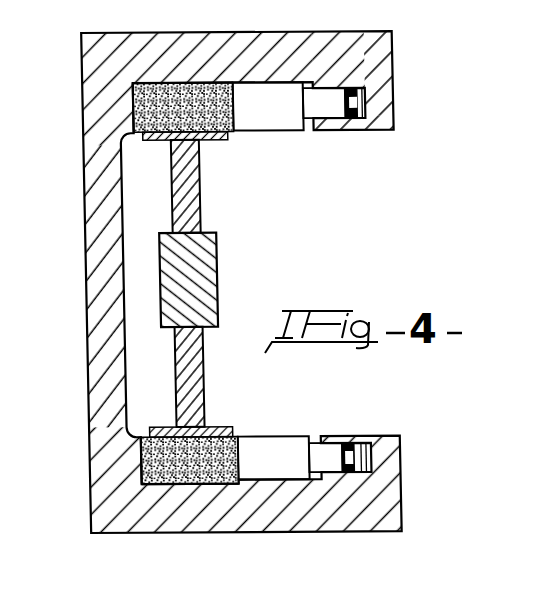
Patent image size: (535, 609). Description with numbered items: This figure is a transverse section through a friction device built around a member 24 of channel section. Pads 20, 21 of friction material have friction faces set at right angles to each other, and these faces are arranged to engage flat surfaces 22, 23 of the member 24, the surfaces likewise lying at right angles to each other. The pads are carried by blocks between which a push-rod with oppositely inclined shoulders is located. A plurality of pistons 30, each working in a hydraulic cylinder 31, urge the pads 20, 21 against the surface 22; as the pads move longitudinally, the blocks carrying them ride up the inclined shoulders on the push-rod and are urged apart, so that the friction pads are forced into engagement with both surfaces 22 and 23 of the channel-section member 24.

The pad 20 is at (165, 105).
The pad 21 is at (187, 457).
The flat surface 22 is at (134, 105).
The flat surface 23 is at (213, 82).
The member of channel section 24 is at (105, 241).
The piston 30 is at (330, 106).
The hydraulic cylinder 31 is at (360, 105).